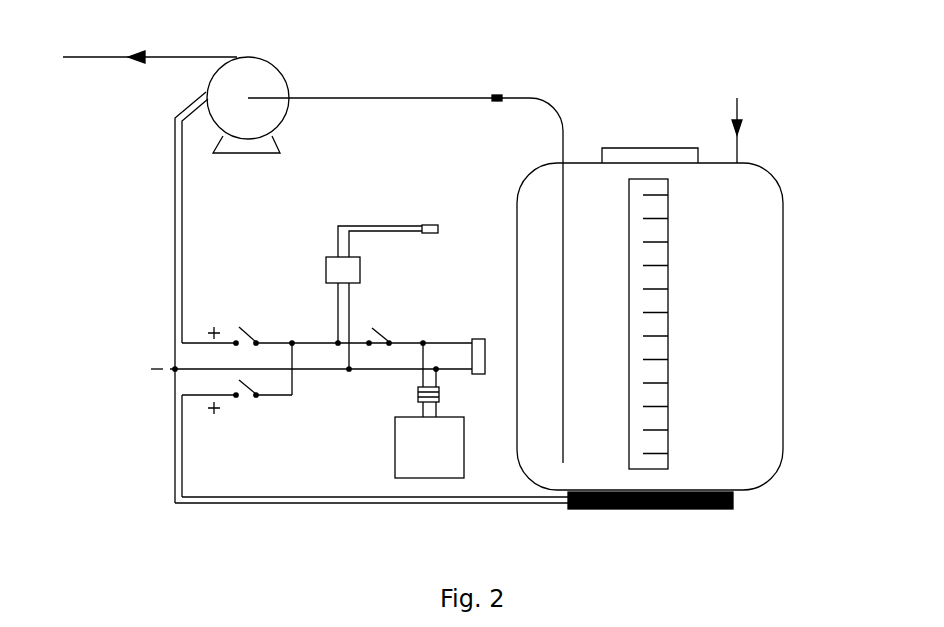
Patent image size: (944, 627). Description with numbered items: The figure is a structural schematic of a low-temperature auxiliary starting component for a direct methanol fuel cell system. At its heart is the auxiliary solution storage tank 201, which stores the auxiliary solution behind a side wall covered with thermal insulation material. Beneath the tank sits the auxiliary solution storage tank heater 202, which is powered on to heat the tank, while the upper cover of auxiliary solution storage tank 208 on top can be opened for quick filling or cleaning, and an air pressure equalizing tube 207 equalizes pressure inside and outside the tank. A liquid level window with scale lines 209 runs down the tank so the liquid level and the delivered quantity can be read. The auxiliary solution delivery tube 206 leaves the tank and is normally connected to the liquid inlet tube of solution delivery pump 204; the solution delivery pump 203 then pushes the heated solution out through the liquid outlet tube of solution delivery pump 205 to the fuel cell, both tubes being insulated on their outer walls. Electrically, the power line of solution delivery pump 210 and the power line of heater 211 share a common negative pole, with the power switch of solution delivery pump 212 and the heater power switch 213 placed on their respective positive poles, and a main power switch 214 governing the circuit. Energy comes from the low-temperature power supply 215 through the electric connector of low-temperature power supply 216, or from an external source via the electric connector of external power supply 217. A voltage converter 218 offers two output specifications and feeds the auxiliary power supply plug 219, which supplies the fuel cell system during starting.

The auxiliary solution storage tank 201 is at (785, 340).
The auxiliary solution storage tank heater 202 is at (650, 518).
The solution delivery pump 203 is at (247, 160).
The liquid inlet tube of solution delivery pump 204 is at (340, 92).
The liquid outlet tube of solution delivery pump 205 is at (93, 65).
The auxiliary solution delivery tube 206 is at (515, 92).
The air pressure equalizing tube 207 is at (747, 112).
The upper cover of auxiliary solution storage tank 208 is at (662, 142).
The liquid level window with scale lines 209 is at (672, 372).
The power line of solution delivery pump 210 is at (170, 192).
The power line of heater 211 is at (170, 496).
The power switch of solution delivery pump 212 is at (243, 327).
The heater power switch 213 is at (246, 402).
The main power switch 214 is at (400, 312).
The low-temperature power supply 215 is at (387, 439).
The electric connector of low-temperature power supply 216 is at (417, 391).
The electric connector of external power supply 217 is at (480, 318).
The voltage converter 218 is at (325, 272).
The auxiliary power supply plug 219 is at (460, 213).